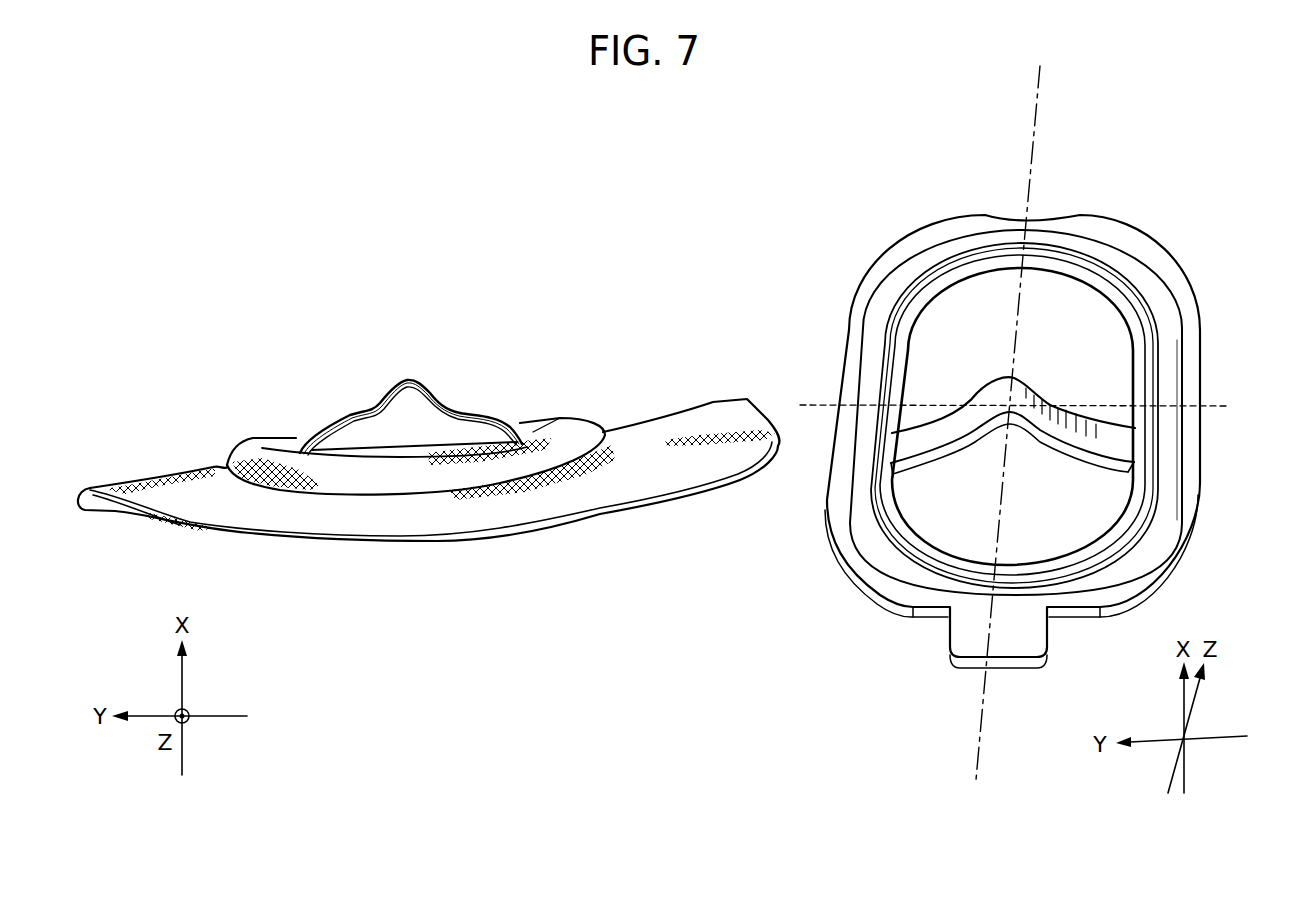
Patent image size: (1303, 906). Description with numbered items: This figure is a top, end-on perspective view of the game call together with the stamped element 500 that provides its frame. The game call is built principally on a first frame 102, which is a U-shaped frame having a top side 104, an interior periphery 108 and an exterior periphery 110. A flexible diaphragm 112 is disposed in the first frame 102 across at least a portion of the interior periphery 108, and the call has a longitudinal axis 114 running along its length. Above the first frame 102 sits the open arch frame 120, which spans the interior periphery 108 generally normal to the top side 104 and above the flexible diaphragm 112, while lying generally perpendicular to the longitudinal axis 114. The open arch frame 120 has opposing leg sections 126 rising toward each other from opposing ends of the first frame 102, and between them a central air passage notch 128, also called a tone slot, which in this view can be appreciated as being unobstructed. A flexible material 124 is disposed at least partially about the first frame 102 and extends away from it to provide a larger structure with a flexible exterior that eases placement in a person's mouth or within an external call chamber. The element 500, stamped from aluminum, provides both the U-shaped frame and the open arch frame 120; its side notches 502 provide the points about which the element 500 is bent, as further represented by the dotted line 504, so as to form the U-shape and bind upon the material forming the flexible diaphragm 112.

The first frame 102 is at (558, 413).
The top side 104 is at (263, 442).
The interior periphery 108 is at (1112, 288).
The exterior periphery 110 is at (213, 465).
The flexible diaphragm 112 is at (393, 445).
The longitudinal axis 114 is at (1017, 410).
The open arch frame 120 is at (382, 385).
The flexible material 124 is at (350, 528).
The leg sections 126 is at (318, 432).
The air passage notch 128 is at (410, 382).
The element 500 is at (884, 245).
The side notches 502 is at (843, 406).
The dotted line 504 is at (1030, 410).